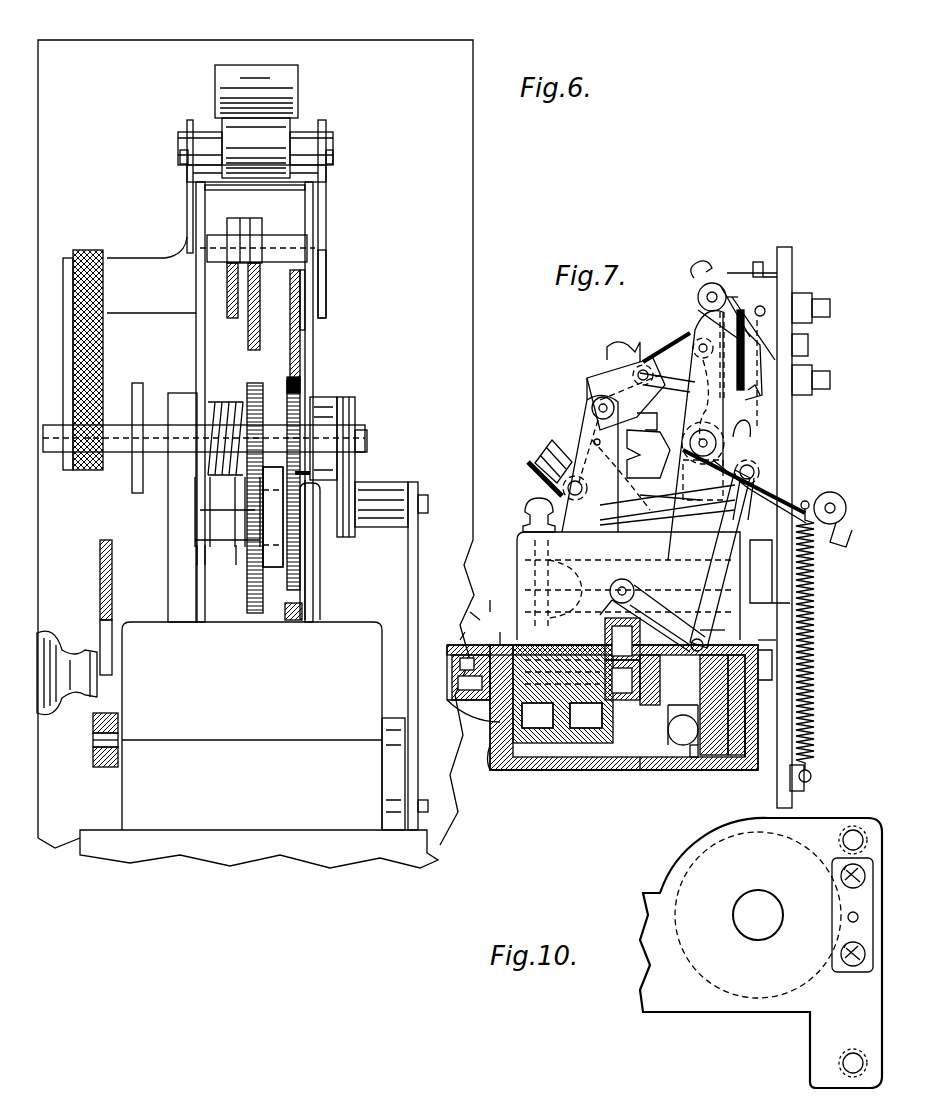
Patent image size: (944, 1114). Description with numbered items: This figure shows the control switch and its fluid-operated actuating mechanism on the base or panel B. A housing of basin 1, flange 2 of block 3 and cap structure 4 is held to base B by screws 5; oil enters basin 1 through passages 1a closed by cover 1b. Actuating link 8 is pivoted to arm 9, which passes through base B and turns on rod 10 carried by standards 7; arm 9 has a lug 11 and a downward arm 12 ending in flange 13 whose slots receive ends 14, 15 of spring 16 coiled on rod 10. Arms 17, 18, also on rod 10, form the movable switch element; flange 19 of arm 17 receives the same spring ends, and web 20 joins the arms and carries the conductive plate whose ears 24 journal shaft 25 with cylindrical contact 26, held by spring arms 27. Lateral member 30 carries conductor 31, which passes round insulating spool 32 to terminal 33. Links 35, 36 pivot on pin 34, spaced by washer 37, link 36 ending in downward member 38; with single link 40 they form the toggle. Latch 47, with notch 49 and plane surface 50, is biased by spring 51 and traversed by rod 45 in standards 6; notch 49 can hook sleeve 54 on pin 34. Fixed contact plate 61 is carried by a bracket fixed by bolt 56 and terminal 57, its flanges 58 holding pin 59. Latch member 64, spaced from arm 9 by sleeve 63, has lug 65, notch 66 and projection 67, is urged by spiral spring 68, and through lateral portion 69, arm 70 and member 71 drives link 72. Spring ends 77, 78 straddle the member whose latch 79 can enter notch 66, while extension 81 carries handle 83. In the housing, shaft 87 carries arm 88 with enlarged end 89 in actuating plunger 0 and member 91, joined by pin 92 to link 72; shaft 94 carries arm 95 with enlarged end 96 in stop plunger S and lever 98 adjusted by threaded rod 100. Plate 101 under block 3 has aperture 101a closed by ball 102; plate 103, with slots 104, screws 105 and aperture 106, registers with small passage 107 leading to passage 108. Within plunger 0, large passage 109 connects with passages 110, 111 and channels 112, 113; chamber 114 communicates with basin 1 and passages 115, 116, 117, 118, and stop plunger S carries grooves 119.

In FIG. 6, the base plate B is at (473, 197).
In FIG. 7, the base plate B is at (792, 418).
In FIG. 7, the base block 1 is at (555, 772).
In FIG. 7, the base portion 1a is at (462, 640).
In FIG. 7, the base portion 1b is at (470, 610).
In FIG. 7, the base wall 2 is at (500, 645).
In FIG. 7, the base wall 3 is at (497, 630).
In FIG. 7, the housing 4 is at (517, 545).
In FIG. 7, the bracket 5 is at (766, 578).
In FIG. 7, the arm 6 is at (582, 436).
In FIG. 6, the frame 7 is at (172, 578).
In FIG. 7, the frame 7 is at (690, 492).
In FIG. 7, the roller 8 is at (838, 545).
In FIG. 6, the bar 9 is at (262, 590).
In FIG. 7, the bar 9 is at (818, 500).
In FIG. 6, the pivot sleeve 10 is at (357, 432).
In FIG. 7, the pivot sleeve 10 is at (703, 430).
In FIG. 7, the plate 11 is at (750, 432).
In FIG. 6, the flange 12 is at (252, 505).
In FIG. 6, the bracket 13 is at (212, 548).
In FIG. 6, the bracket 14 is at (199, 548).
In FIG. 6, the bracket 15 is at (236, 550).
In FIG. 6, the spring 16 is at (213, 410).
In FIG. 6, the frame bar 17 is at (196, 360).
In FIG. 6, the link 18 is at (313, 345).
In FIG. 7, the link 18 is at (686, 398).
In FIG. 6, the bracket 19 is at (225, 517).
In FIG. 6, the cross piece 20 is at (212, 290).
In FIG. 6, the side plate 24 is at (187, 125).
In FIG. 7, the side plate 24 is at (698, 300).
In FIG. 6, the bracket 25 is at (178, 140).
In FIG. 6, the block 26 is at (232, 135).
In FIG. 7, the block 26 is at (700, 312).
In FIG. 6, the screw 27 is at (182, 158).
In FIG. 6, the arm 30 is at (128, 257).
In FIG. 6, the knob 31 is at (75, 340).
In FIG. 7, the knob 31 is at (748, 392).
In FIG. 6, the disc 32 is at (137, 470).
In FIG. 7, the screw 33 is at (830, 381).
In FIG. 6, the plate 34 is at (326, 262).
In FIG. 7, the plate 34 is at (698, 352).
In FIG. 6, the bar 35 is at (232, 318).
In FIG. 6, the lever 36 is at (258, 300).
In FIG. 7, the lever 36 is at (696, 338).
In FIG. 6, the collar 37 is at (242, 225).
In FIG. 6, the bar 38 is at (292, 355).
In FIG. 7, the bar 38 is at (732, 402).
In FIG. 7, the link 40 is at (615, 372).
In FIG. 7, the pin 45 is at (597, 446).
In FIG. 6, the plate 47 is at (302, 328).
In FIG. 7, the plate 47 is at (598, 376).
In FIG. 7, the hook 49 is at (637, 345).
In FIG. 7, the pivot 50 is at (652, 385).
In FIG. 7, the pivot 51 is at (592, 404).
In FIG. 6, the shaft 54 is at (284, 240).
In FIG. 7, the screw 56 is at (810, 345).
In FIG. 7, the screw 57 is at (830, 310).
In FIG. 7, the bracket 58 is at (770, 290).
In FIG. 7, the hole 59 is at (764, 310).
In FIG. 6, the block 61 is at (272, 68).
In FIG. 7, the block 61 is at (708, 268).
In FIG. 6, the gear 63 is at (255, 495).
In FIG. 6, the plate 64 is at (312, 580).
In FIG. 6, the stop 65 is at (302, 390).
In FIG. 7, the stop 65 is at (652, 432).
In FIG. 6, the cam 66 is at (367, 445).
In FIG. 7, the cam 66 is at (632, 464).
In FIG. 6, the pin 67 is at (275, 560).
In FIG. 7, the pin 67 is at (805, 500).
In FIG. 7, the spring 68 is at (815, 702).
In FIG. 6, the bar 69 is at (312, 552).
In FIG. 6, the collar 70 is at (362, 430).
In FIG. 6, the cylinder 71 is at (395, 500).
In FIG. 6, the rod 72 is at (418, 545).
In FIG. 7, the rod 72 is at (712, 585).
In FIG. 7, the rod 77 is at (530, 475).
In FIG. 7, the rod end 78 is at (550, 446).
In FIG. 6, the block 79 is at (294, 620).
In FIG. 7, the block 79 is at (635, 522).
In FIG. 6, the bar 81 is at (100, 608).
In FIG. 7, the bar 81 is at (612, 508).
In FIG. 6, the knob 83 is at (47, 720).
In FIG. 7, the lever 87 is at (621, 580).
In FIG. 7, the pivot 88 is at (705, 645).
In FIG. 7, the link 89 is at (720, 625).
In FIG. 6, the bearing 91 is at (395, 790).
In FIG. 7, the bearing 91 is at (638, 590).
In FIG. 6, the screw 92 is at (428, 808).
In FIG. 6, the bushing 94 is at (95, 760).
In FIG. 6, the bushing 95 is at (93, 722).
In FIG. 7, the bushing 95 is at (612, 600).
In FIG. 7, the cam 96 is at (555, 590).
In FIG. 7, the pivot 98 is at (577, 498).
In FIG. 7, the button 100 is at (528, 512).
In FIG. 7, the plate 101 is at (520, 772).
In FIG. 10, the plate 101 is at (708, 1013).
In FIG. 10, the hole 101a is at (760, 930).
In FIG. 7, the pin 102 is at (705, 760).
In FIG. 7, the bracket 103 is at (736, 760).
In FIG. 10, the bracket 103 is at (836, 938).
In FIG. 10, the screw 104 is at (840, 877).
In FIG. 10, the screw 105 is at (840, 898).
In FIG. 10, the hole 106 is at (848, 917).
In FIG. 7, the hole 107 is at (745, 735).
In FIG. 10, the hole 107 is at (870, 835).
In FIG. 7, the plate 108 is at (772, 660).
In FIG. 7, the pin 109 is at (718, 762).
In FIG. 7, the ball 110 is at (675, 748).
In FIG. 7, the wall 111 is at (730, 720).
In FIG. 7, the post 112 is at (622, 680).
In FIG. 7, the plate 113 is at (765, 672).
In FIG. 7, the cavity 114 is at (595, 772).
In FIG. 7, the post 115 is at (622, 639).
In FIG. 7, the cavity 116 is at (622, 772).
In FIG. 7, the step 117 is at (492, 735).
In FIG. 7, the step 118 is at (492, 762).
In FIG. 7, the step 119 is at (490, 715).
In FIG. 7, the point 0 is at (643, 779).
In FIG. 7, the point S is at (490, 600).